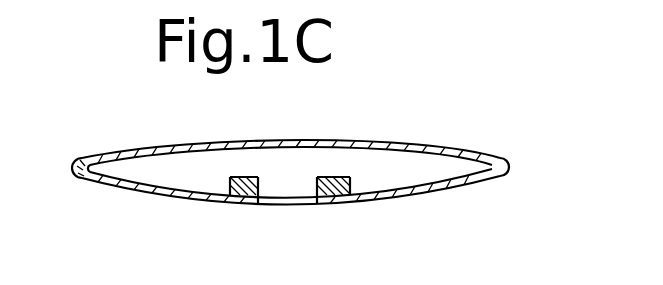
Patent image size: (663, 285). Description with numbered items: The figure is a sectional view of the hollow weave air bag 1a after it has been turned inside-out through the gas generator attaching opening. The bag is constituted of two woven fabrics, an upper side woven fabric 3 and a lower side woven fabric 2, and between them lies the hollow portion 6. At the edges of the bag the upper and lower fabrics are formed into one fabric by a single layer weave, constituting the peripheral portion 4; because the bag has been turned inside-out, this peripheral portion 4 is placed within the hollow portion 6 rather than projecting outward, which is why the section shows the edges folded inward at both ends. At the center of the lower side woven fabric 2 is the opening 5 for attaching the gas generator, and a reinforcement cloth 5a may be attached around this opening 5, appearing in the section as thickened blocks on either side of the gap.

The air bag 1a is at (535, 100).
The lower side woven fabric 2 is at (420, 192).
The upper side woven fabric 3 is at (410, 141).
The peripheral portion 4 is at (80, 186).
The opening 5 is at (286, 192).
The reinforcement cloth 5a is at (342, 178).
The hollow portion 6 is at (328, 160).